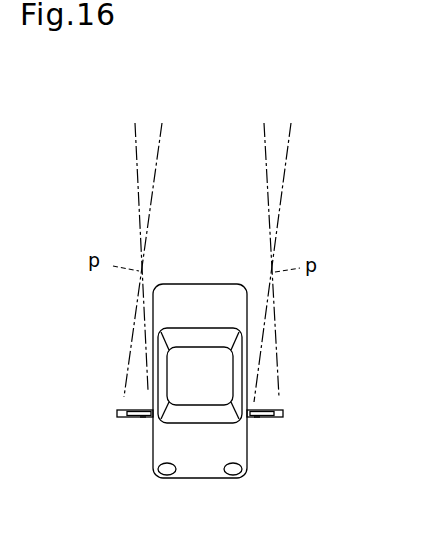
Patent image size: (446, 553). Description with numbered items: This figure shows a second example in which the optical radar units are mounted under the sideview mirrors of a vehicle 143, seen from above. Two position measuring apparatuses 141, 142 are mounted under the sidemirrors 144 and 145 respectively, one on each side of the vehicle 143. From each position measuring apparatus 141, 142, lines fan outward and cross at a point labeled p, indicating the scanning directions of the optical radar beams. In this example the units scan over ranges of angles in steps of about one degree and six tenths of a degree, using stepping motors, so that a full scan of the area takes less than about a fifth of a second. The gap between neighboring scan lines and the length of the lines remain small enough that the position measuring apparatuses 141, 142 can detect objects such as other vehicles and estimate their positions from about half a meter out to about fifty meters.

The position measuring apparatus 141 is at (283, 413).
The position measuring apparatus 142 is at (117, 413).
The vehicle 143 is at (202, 465).
The sidemirror 144 is at (255, 418).
The sidemirror 145 is at (143, 420).